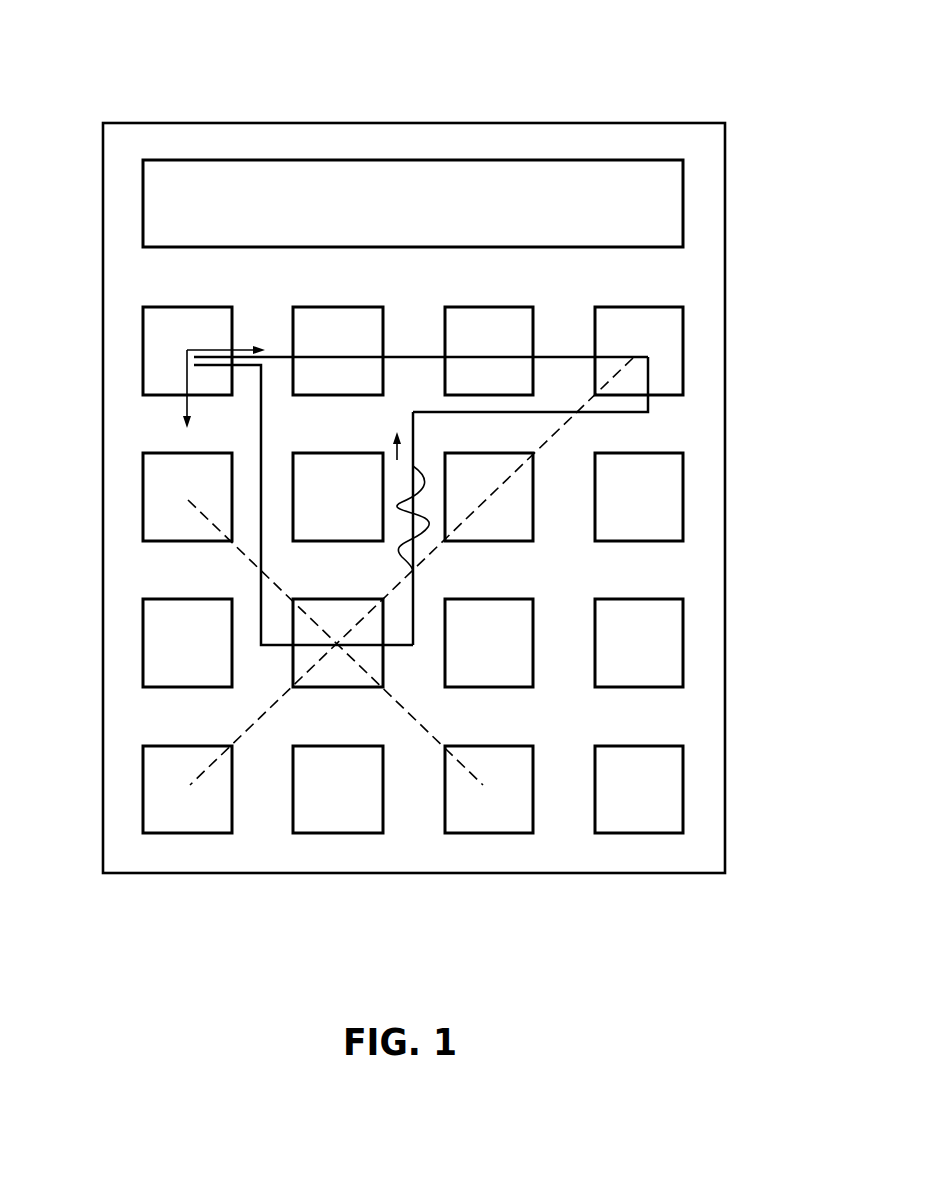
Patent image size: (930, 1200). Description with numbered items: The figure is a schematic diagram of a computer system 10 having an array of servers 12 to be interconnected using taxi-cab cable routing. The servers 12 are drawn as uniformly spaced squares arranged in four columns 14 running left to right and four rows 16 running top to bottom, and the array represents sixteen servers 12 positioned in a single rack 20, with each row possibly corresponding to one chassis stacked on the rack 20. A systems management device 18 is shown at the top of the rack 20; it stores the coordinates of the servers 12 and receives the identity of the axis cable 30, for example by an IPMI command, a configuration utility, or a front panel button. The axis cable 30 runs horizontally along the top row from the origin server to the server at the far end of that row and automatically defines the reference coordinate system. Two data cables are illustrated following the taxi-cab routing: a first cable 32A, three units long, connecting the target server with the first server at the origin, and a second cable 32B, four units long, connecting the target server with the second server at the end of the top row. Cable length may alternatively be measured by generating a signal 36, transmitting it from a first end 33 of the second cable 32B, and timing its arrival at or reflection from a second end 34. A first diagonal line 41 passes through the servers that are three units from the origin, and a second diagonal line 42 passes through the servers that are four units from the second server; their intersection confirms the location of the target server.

The computer system 10 is at (188, 94).
The server 12 is at (174, 307).
The column 14 is at (742, 320).
The row 16 is at (172, 899).
The systems management device 18 is at (683, 205).
The rack 20 is at (684, 123).
The axis cable 30 is at (548, 356).
The first cable 32A is at (259, 606).
The second cable 32B is at (413, 607).
The first end 33 is at (337, 641).
The second end 34 is at (650, 377).
The signal 36 is at (402, 502).
The first diagonal line 41 is at (247, 731).
The second diagonal line 42 is at (430, 735).